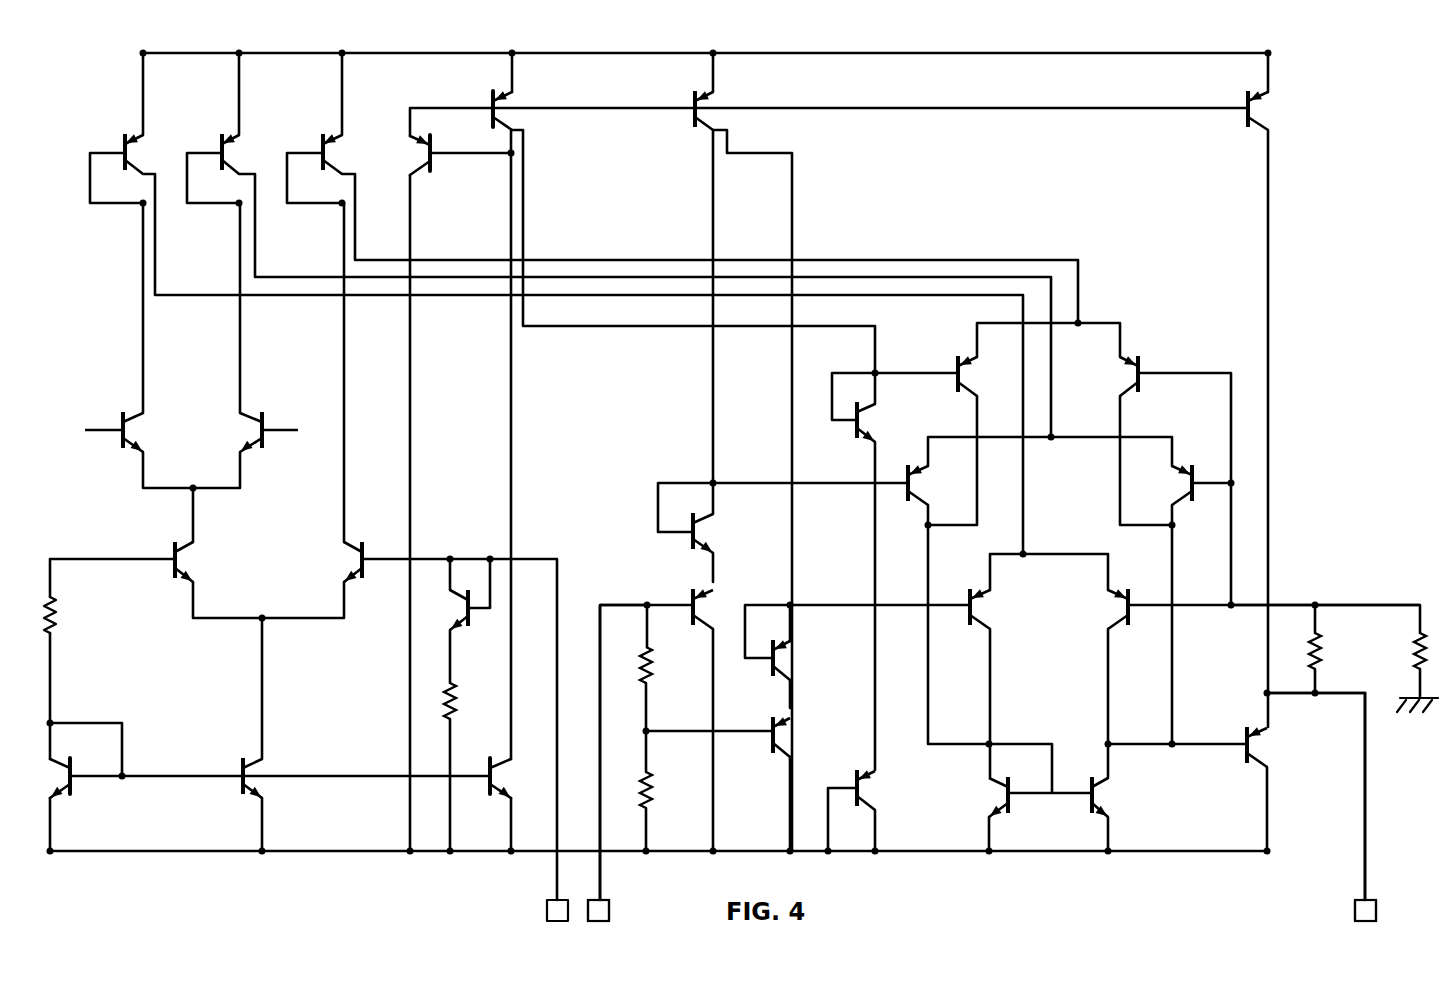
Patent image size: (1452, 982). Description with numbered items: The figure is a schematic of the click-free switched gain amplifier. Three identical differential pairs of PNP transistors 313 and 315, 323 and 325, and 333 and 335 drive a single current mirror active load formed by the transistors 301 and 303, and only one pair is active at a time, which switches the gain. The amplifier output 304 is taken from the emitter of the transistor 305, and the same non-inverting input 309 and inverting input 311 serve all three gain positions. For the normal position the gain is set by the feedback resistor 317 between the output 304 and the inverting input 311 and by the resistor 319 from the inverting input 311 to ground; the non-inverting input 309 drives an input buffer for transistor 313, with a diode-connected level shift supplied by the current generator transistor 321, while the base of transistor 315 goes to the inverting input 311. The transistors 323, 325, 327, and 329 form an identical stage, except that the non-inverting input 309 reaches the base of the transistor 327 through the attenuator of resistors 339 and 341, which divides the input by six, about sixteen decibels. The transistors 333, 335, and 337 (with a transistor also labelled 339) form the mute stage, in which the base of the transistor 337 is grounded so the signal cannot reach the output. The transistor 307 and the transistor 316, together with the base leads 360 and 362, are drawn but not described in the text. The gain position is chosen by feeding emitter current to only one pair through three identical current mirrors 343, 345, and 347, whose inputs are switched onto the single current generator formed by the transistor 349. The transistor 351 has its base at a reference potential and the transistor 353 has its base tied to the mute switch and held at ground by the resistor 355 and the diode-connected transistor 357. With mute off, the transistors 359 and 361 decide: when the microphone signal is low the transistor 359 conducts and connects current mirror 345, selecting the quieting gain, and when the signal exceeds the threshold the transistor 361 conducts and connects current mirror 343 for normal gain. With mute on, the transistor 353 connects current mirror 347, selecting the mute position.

The transistor 301 is at (1012, 800).
The transistor 303 is at (1087, 785).
The amplifier output 304 is at (1365, 770).
The transistor 305 is at (1240, 755).
The transistor 307 is at (1243, 115).
The non-inverting input 309 is at (600, 603).
The inverting input 311 is at (1372, 605).
The PNP transistor 313 is at (940, 485).
The PNP transistor 315 is at (1195, 470).
The transistor 316 is at (700, 597).
The feedback resistor 317 is at (1318, 633).
The resistor 319 is at (698, 528).
The transistor 321 is at (690, 114).
The PNP transistor 323 is at (968, 620).
The PNP transistor 325 is at (1133, 620).
The transistor 327 is at (786, 744).
The transistor 329 is at (773, 652).
The PNP transistor 333 is at (957, 363).
The PNP transistor 335 is at (1140, 385).
The transistor 337 is at (855, 782).
The resistor 339 is at (856, 428).
The resistor 341 is at (655, 790).
The current mirror 343 is at (220, 140).
The current mirror 345 is at (122, 140).
The current mirror 347 is at (321, 140).
The transistor 349 is at (240, 768).
The transistor 351 is at (170, 575).
The transistor 353 is at (368, 588).
The resistor 355 is at (452, 693).
The diode-connected transistor 357 is at (470, 597).
The transistor 359 is at (115, 440).
The input base lead 360 is at (88, 430).
The transistor 361 is at (262, 440).
The input base lead 362 is at (297, 430).